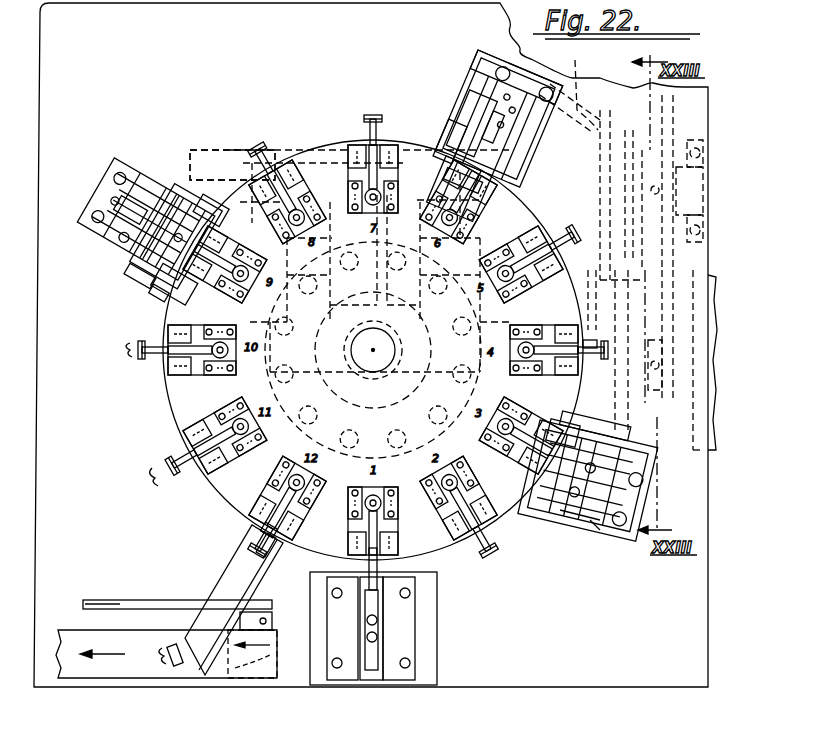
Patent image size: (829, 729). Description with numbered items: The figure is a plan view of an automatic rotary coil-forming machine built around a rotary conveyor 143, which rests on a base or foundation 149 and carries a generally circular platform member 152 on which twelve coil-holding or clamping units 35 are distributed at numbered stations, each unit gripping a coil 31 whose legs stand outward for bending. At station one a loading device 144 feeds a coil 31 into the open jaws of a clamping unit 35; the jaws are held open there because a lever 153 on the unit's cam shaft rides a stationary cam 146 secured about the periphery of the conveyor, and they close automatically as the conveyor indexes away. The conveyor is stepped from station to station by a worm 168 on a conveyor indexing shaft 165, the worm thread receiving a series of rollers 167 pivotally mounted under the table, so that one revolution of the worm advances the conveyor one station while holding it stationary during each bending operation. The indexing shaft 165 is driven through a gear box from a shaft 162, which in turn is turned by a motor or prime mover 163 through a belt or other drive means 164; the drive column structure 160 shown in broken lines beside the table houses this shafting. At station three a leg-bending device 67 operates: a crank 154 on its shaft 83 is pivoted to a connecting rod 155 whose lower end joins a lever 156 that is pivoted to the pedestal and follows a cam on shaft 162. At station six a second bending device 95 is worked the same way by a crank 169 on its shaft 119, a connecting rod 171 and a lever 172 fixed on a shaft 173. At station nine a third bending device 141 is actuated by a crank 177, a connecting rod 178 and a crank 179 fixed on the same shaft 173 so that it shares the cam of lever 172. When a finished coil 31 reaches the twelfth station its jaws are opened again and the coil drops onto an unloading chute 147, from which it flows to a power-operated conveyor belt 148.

The workpiece 31 is at (135, 362).
The coil-holding device 35 is at (345, 150).
The leg-bending device 67 is at (577, 530).
The shaft 83 is at (572, 420).
The leg-bending device 95 is at (497, 52).
The shaft 119 is at (458, 108).
The leg-bending device 141 is at (108, 235).
The rotary conveyor 143 is at (170, 398).
The loading device 144 is at (437, 625).
The stationary cam 146 is at (232, 500).
The unloading chute 147 is at (262, 575).
The conveyor belt 148 is at (125, 680).
The base 149 is at (548, 685).
The platform member 152 is at (520, 495).
The lever 153 is at (275, 548).
The crank 154 is at (620, 428).
The connecting rod 155 is at (640, 400).
The lever 156 is at (597, 352).
The support 160 is at (625, 350).
The shaft 162 is at (658, 135).
The motor 163 is at (688, 455).
The belt 164 is at (640, 310).
The conveyor indexing shaft 165 is at (575, 228).
The rollers 167 is at (390, 366).
The worm 168 is at (397, 344).
The crank 169 is at (460, 85).
The connecting rod 171 is at (480, 62).
The lever 172 is at (580, 92).
The shaft 173 is at (215, 150).
The crank 177 is at (138, 284).
The connecting rod 178 is at (158, 302).
The crank 179 is at (150, 165).